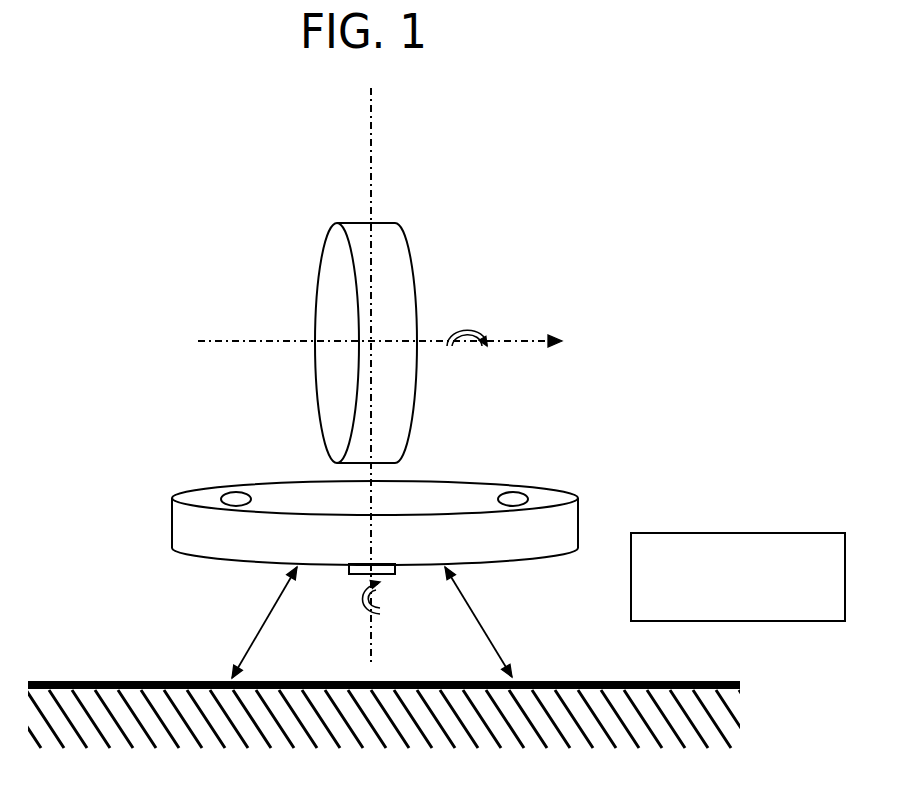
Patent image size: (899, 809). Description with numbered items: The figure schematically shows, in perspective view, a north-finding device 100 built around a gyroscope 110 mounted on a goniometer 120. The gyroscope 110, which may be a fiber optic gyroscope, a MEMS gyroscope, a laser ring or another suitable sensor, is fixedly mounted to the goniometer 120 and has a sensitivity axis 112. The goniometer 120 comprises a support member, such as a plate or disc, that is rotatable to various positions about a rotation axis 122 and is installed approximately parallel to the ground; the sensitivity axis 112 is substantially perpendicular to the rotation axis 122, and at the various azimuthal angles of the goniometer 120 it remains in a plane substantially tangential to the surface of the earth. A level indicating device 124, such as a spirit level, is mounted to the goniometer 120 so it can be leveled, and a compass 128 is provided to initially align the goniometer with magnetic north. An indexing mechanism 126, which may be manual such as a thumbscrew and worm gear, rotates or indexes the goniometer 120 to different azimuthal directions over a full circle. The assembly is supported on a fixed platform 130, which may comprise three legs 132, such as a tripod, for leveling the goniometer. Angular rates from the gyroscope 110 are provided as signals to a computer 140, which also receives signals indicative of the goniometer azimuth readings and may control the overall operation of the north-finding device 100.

The north-finding device 100 is at (271, 128).
The gyroscope 110 is at (339, 212).
The sensitivity axis 112 is at (258, 340).
The goniometer 120 is at (188, 478).
The rotation axis 122 is at (371, 153).
The level indicating device 124 is at (513, 491).
The indexing mechanism 126 is at (392, 577).
The compass 128 is at (236, 491).
The fixed platform 130 is at (89, 672).
The legs 132 is at (263, 620).
The computer 140 is at (709, 519).